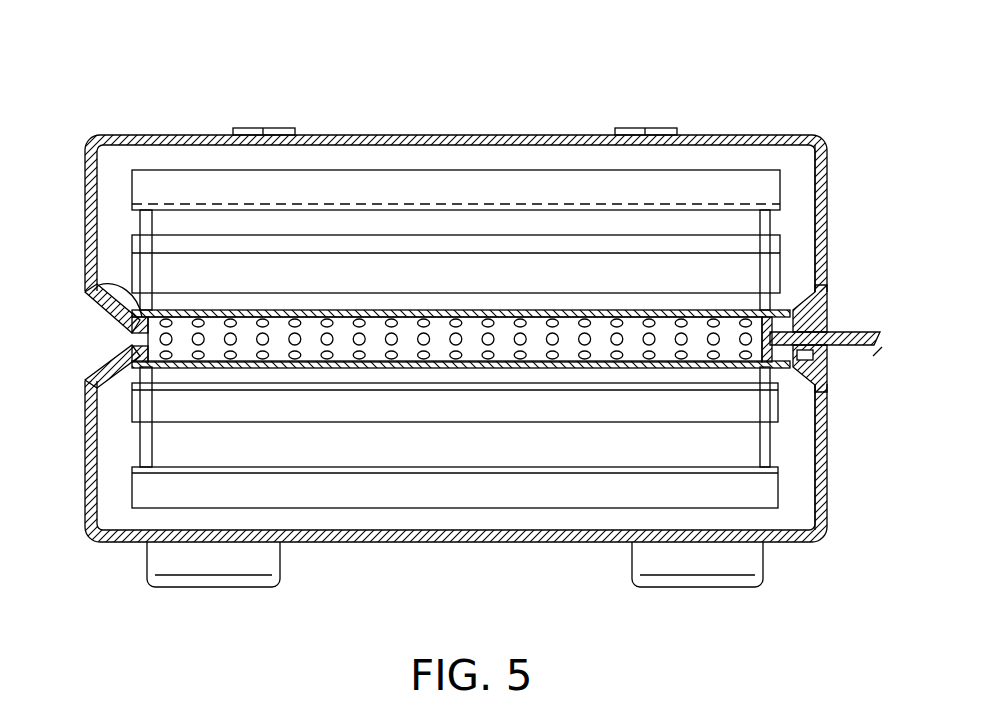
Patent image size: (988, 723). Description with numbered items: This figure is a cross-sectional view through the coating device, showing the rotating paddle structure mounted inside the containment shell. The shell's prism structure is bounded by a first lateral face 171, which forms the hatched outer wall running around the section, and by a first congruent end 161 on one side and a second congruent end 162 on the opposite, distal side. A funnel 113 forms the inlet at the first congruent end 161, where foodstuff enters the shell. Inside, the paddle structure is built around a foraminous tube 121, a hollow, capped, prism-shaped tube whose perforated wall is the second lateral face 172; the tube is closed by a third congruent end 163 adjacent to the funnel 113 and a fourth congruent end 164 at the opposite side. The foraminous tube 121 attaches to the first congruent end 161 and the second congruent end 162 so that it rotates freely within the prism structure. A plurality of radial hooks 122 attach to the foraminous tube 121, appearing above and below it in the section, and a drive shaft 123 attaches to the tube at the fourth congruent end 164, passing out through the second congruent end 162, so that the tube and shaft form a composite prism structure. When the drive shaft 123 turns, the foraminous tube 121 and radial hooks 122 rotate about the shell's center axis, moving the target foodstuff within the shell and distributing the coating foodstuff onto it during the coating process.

The funnel 113 is at (100, 340).
The foraminous tube 121 is at (732, 340).
The radial hooks 122 is at (762, 185).
The drive shaft 123 is at (838, 332).
The first congruent end 161 is at (96, 210).
The second congruent end 162 is at (827, 200).
The third congruent end 163 is at (96, 286).
The fourth congruent end 164 is at (772, 323).
The first lateral face 171 is at (335, 135).
The second lateral face 172 is at (349, 311).